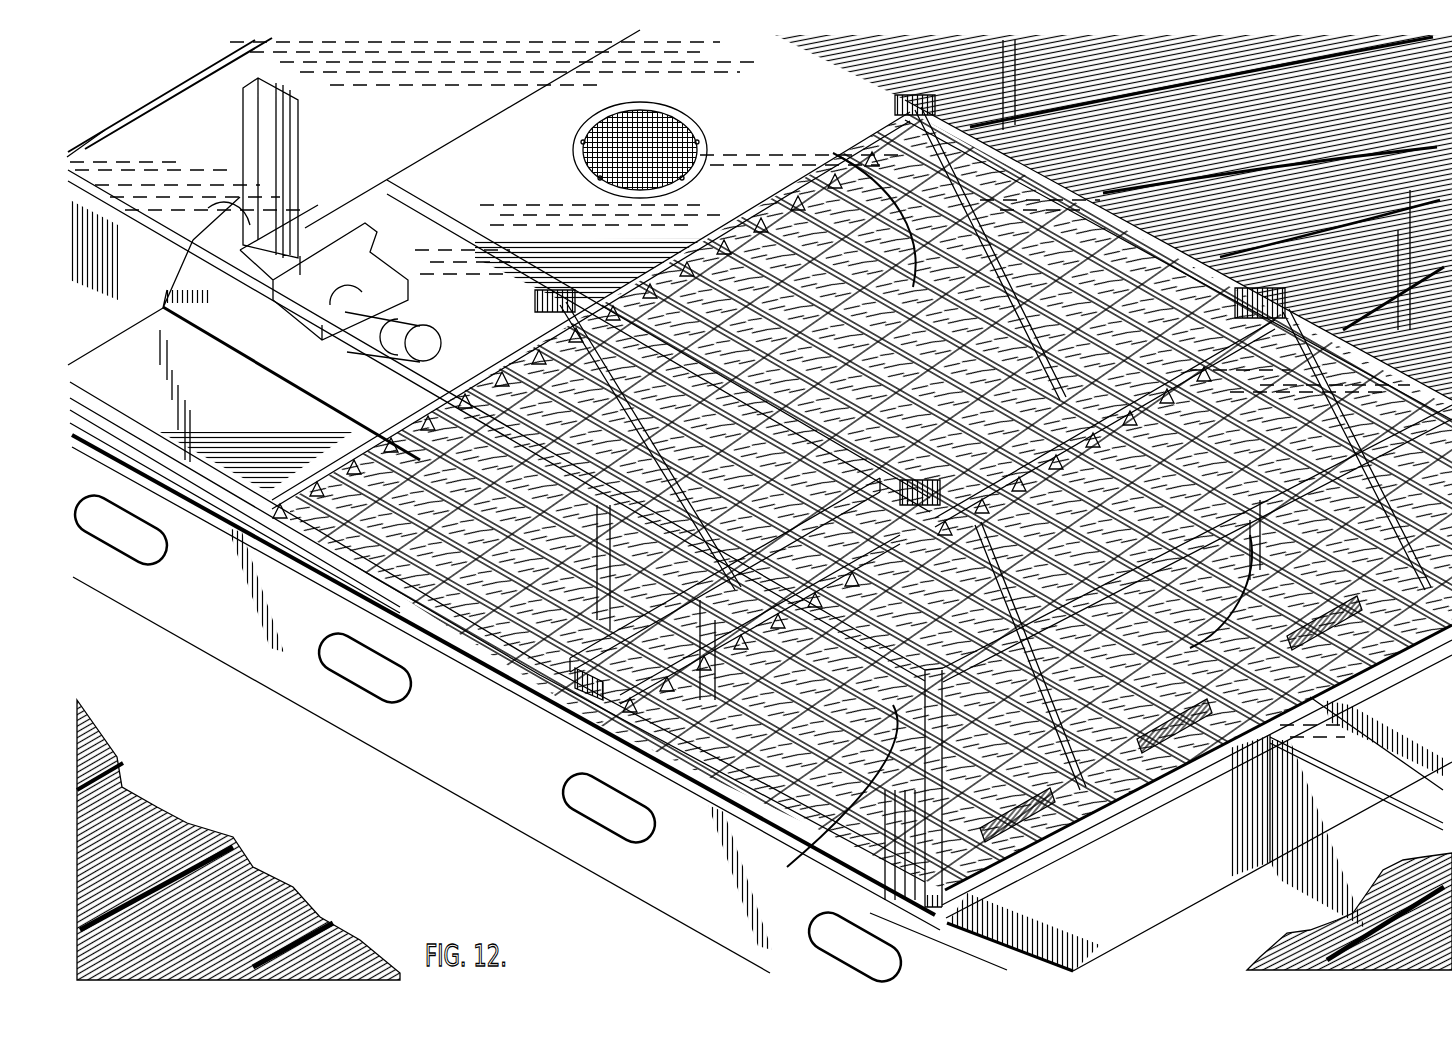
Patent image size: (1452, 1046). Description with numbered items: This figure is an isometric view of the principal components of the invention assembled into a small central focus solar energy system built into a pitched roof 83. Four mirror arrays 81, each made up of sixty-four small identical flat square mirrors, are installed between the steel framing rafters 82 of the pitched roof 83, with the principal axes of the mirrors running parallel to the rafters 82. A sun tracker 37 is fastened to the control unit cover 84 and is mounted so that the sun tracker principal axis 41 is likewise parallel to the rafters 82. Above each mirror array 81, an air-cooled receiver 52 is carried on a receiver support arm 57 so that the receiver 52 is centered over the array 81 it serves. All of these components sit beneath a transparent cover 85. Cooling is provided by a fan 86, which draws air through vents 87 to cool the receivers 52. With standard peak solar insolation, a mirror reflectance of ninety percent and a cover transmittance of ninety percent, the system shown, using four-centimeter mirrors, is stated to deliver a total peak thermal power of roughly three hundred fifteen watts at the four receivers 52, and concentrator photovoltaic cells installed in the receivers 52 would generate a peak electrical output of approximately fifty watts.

The sun tracker 37 is at (270, 372).
The sun tracker principal axis 41 is at (190, 193).
The air-cooled receiver 52 is at (535, 302).
The receiver support arm 57 is at (615, 392).
The mirror array 81 is at (845, 150).
The steel framing rafters 82 is at (600, 877).
The pitched roof 83 is at (305, 893).
The control unit cover 84 is at (128, 332).
The transparent cover 85 is at (712, 620).
The fan 86 is at (575, 170).
The vents 87 is at (1345, 655).